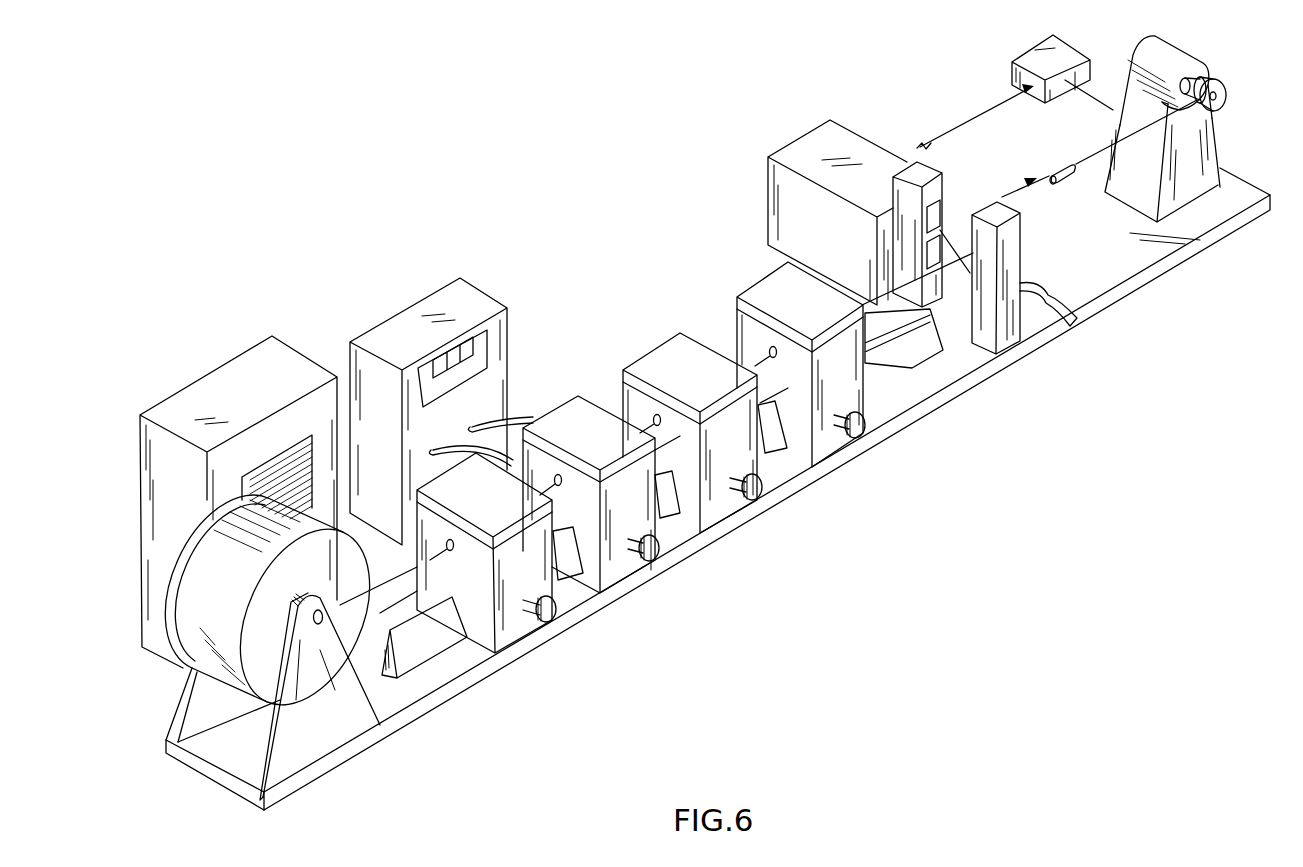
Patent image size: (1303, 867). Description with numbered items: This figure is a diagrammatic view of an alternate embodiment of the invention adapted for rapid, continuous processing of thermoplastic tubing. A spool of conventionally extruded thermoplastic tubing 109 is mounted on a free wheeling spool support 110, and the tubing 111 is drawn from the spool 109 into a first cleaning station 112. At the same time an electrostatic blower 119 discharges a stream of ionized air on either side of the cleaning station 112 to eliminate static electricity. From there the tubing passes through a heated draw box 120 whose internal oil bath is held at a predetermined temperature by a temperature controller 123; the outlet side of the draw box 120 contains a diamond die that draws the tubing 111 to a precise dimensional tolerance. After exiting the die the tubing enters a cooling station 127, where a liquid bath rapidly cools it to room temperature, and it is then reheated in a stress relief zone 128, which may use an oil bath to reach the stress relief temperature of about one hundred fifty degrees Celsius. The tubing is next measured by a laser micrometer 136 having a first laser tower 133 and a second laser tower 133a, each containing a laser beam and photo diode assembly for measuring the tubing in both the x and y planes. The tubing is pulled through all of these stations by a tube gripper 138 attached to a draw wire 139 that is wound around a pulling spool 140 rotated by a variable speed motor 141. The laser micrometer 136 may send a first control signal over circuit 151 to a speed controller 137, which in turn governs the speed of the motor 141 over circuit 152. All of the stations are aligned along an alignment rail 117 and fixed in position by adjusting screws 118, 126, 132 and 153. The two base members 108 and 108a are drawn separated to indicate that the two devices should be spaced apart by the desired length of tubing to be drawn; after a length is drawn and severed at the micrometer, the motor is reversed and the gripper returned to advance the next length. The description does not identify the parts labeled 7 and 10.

The take-up unit 7 is at (1207, 140).
The guide post 10 is at (1010, 239).
The base member 108 is at (1010, 367).
The base member 108a is at (1112, 307).
The spool of thermoplastic tubing 109 is at (215, 583).
The free wheeling spool support 110 is at (318, 748).
The tubing 111 is at (390, 590).
The first cleaning station 112 is at (508, 624).
The alignment rail 117 is at (405, 663).
The adjusting screw 118 is at (525, 615).
The electrostatic blower 119 is at (228, 372).
The heated draw box 120 is at (610, 565).
The temperature controller 123 is at (407, 300).
The adjusting screw 126 is at (633, 556).
The cooling station 127 is at (711, 505).
The stress relief zone 128 is at (824, 437).
The adjusting screw 132 is at (741, 494).
The first laser tower 133 is at (930, 150).
The second laser tower 133a is at (1032, 282).
The laser micrometer 136 is at (802, 148).
The speed controller 137 is at (1058, 48).
The tube gripper 138 is at (1062, 167).
The draw wire 139 is at (1132, 135).
The pulling spool 140 is at (1226, 95).
The variable speed motor 141 is at (1168, 42).
The circuit 151 is at (972, 120).
The circuit 152 is at (1100, 97).
The adjusting screw 153 is at (840, 430).